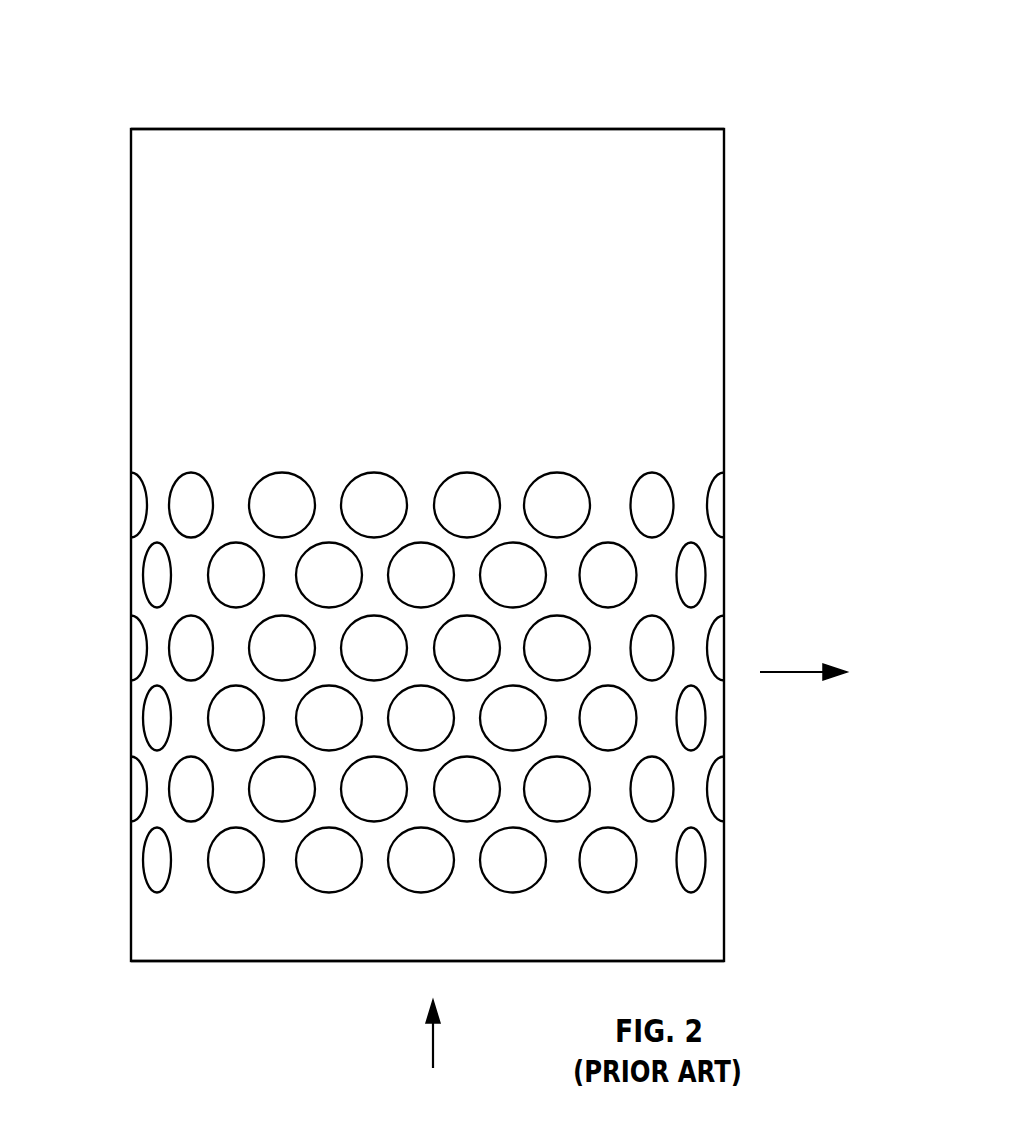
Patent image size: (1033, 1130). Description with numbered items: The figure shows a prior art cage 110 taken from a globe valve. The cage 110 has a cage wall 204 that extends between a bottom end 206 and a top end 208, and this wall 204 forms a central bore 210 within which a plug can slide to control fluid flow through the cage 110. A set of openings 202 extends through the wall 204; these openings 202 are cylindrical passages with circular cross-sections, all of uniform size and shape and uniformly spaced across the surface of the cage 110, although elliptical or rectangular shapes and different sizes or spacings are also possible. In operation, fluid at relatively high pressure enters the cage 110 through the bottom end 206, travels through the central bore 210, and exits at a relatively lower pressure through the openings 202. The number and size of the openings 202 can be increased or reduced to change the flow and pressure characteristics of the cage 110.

The cage 110 is at (610, 72).
The openings 202 is at (466, 475).
The cage wall 204 is at (130, 356).
The bottom end 206 is at (285, 961).
The top end 208 is at (293, 129).
The central bore 210 is at (425, 115).